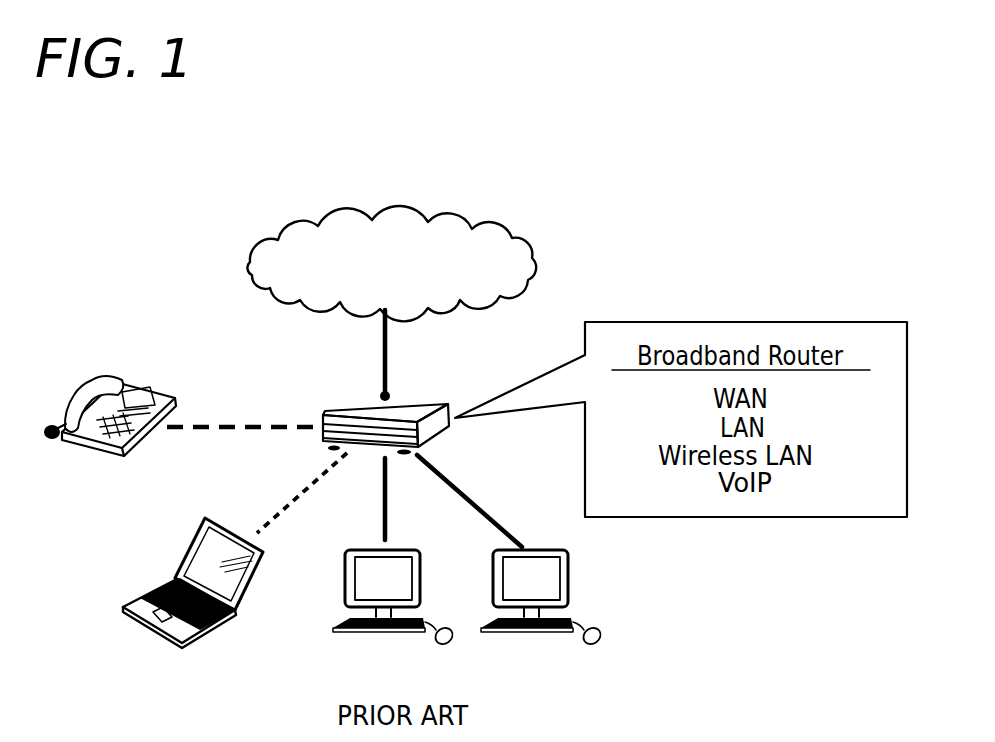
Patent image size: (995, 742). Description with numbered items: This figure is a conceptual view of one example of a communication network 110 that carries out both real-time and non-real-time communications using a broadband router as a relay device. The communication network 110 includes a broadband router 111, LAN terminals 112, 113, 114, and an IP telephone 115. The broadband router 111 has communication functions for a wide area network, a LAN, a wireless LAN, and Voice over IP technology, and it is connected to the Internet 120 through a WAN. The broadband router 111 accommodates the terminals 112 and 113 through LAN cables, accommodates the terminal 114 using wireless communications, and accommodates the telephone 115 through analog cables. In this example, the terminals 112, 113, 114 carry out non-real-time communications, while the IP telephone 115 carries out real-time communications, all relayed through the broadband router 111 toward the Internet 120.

The communication network 110 is at (725, 155).
The broadband router 111 is at (447, 405).
The LAN terminal 112 is at (570, 580).
The LAN terminal 113 is at (422, 578).
The LAN terminal 114 is at (258, 572).
The IP telephone 115 is at (140, 452).
The Internet 120 is at (423, 221).